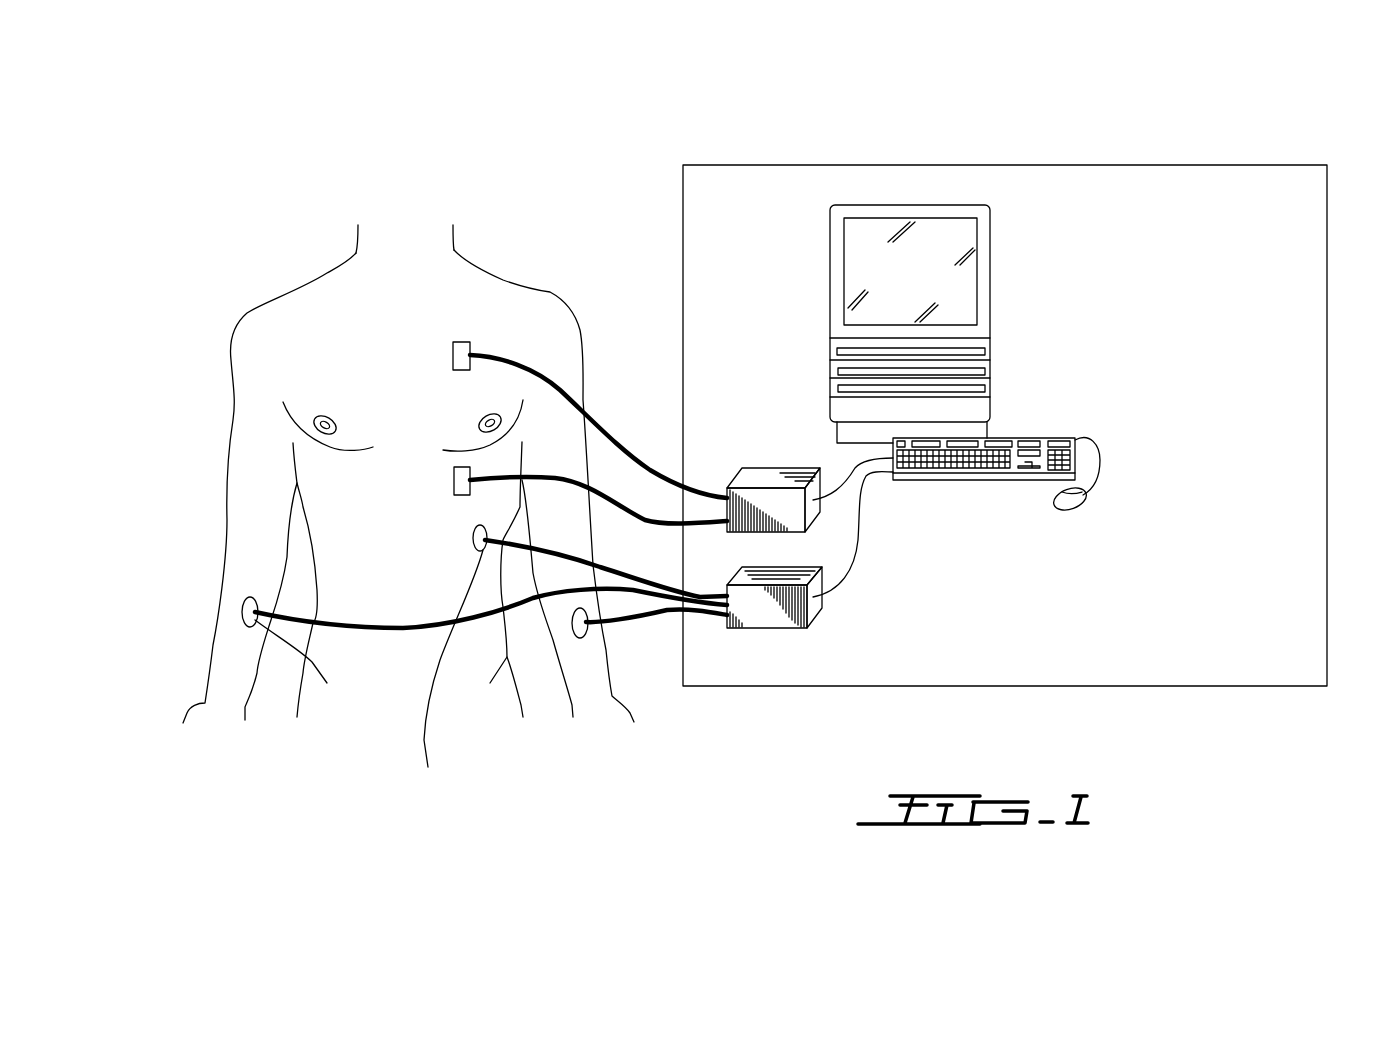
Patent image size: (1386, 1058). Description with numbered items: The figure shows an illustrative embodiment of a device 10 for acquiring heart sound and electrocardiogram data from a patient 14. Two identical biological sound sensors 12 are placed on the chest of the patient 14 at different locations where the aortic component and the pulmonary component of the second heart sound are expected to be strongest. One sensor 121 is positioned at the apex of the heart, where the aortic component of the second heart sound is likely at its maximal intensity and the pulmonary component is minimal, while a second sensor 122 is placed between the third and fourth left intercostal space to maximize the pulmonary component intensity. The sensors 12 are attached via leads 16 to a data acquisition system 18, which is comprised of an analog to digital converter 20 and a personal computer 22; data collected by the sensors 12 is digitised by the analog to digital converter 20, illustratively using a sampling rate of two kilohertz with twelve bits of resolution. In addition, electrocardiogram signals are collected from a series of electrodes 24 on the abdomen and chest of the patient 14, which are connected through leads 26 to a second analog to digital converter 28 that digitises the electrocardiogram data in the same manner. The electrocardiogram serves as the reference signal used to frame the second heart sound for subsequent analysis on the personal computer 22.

The device 10 is at (480, 122).
The biological sound sensors 12 is at (361, 378).
The first sensor 121 is at (460, 341).
The second sensor 122 is at (453, 477).
The patient 14 is at (333, 268).
The leads 16 is at (553, 475).
The data acquisition system 18 is at (753, 166).
The analog to digital converter 20 is at (730, 482).
The personal computer 22 is at (990, 310).
The electrodes 24 is at (303, 660).
The leads 26 is at (628, 593).
The second analog to digital converter 28 is at (758, 628).